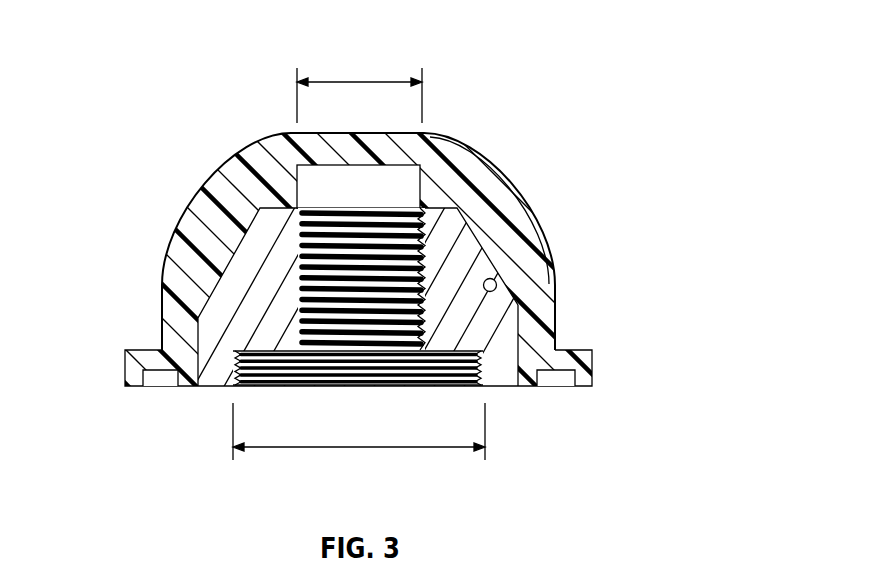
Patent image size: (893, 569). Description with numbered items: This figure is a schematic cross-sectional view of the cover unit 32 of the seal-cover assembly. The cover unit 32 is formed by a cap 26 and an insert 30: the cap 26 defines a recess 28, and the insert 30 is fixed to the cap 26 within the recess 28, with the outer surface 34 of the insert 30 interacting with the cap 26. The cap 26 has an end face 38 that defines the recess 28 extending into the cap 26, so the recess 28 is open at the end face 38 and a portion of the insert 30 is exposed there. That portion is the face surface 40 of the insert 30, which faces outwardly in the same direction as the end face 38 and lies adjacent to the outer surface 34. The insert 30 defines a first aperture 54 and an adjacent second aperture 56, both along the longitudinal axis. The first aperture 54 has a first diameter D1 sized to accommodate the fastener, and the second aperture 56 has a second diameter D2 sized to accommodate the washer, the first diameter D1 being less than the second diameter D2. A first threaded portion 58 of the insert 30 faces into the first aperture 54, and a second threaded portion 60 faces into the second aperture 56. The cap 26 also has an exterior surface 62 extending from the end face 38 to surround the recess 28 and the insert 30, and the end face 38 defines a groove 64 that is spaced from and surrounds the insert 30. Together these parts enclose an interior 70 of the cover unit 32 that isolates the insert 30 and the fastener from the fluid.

The cap 26 is at (532, 236).
The recess 28 is at (540, 283).
The insert 30 is at (512, 340).
The cover unit 32 is at (103, 215).
The outer surface 34 is at (473, 227).
The end face 38 is at (578, 388).
The face surface 40 is at (503, 388).
The first aperture 54 is at (298, 222).
The first threaded portion 58 is at (361, 279).
The second aperture 56 is at (235, 376).
The second threaded portion 60 is at (358, 368).
The exterior surface 62 is at (484, 162).
The groove 64 is at (152, 368).
The interior 70 is at (358, 394).
The first diameter D1 is at (360, 80).
The second diameter D2 is at (362, 449).